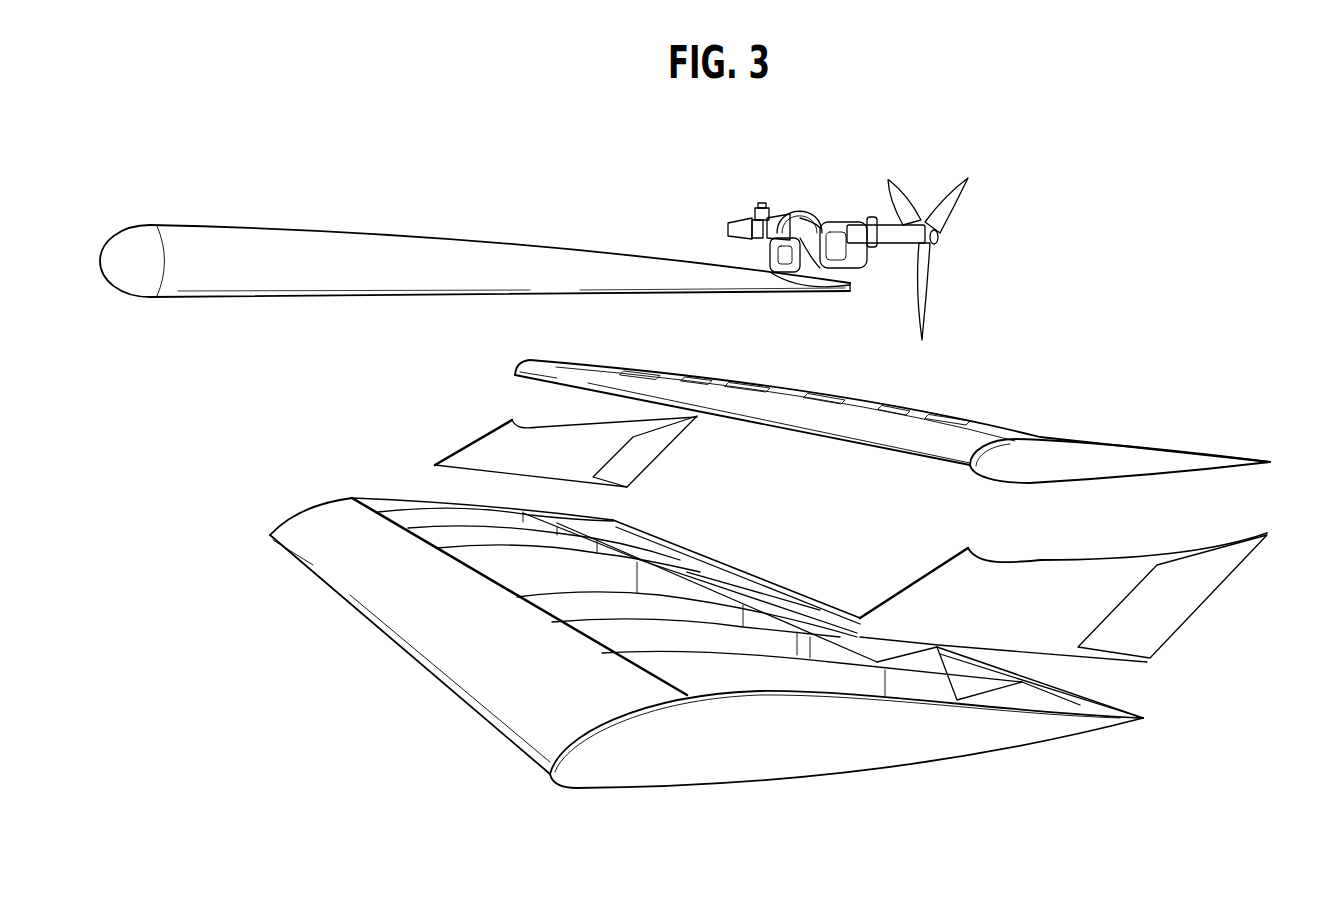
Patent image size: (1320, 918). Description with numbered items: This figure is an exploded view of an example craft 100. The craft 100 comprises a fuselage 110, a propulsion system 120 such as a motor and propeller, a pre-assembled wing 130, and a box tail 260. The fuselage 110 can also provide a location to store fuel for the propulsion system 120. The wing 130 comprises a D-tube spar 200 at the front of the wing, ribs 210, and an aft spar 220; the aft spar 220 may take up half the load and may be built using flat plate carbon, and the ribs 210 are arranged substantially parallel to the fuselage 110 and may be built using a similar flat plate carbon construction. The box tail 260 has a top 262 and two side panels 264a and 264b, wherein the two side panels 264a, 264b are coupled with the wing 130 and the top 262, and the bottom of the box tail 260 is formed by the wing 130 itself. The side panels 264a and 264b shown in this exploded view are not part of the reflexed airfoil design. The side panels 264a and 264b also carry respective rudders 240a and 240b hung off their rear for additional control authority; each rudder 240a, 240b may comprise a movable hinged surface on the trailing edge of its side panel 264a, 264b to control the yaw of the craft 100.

The craft 100 is at (1107, 297).
The fuselage 110 is at (283, 228).
The propulsion system 120 is at (790, 202).
The pre-assembled wing 130 is at (352, 632).
The D-tube spar 200 is at (317, 525).
The ribs 210 is at (795, 657).
The aft spar 220 is at (683, 582).
The rudder 240a is at (1176, 613).
The rudder 240b is at (647, 450).
The box tail 260 is at (1043, 410).
The top 262 is at (1183, 447).
The side panel 264a is at (1040, 650).
The side panel 264b is at (490, 447).